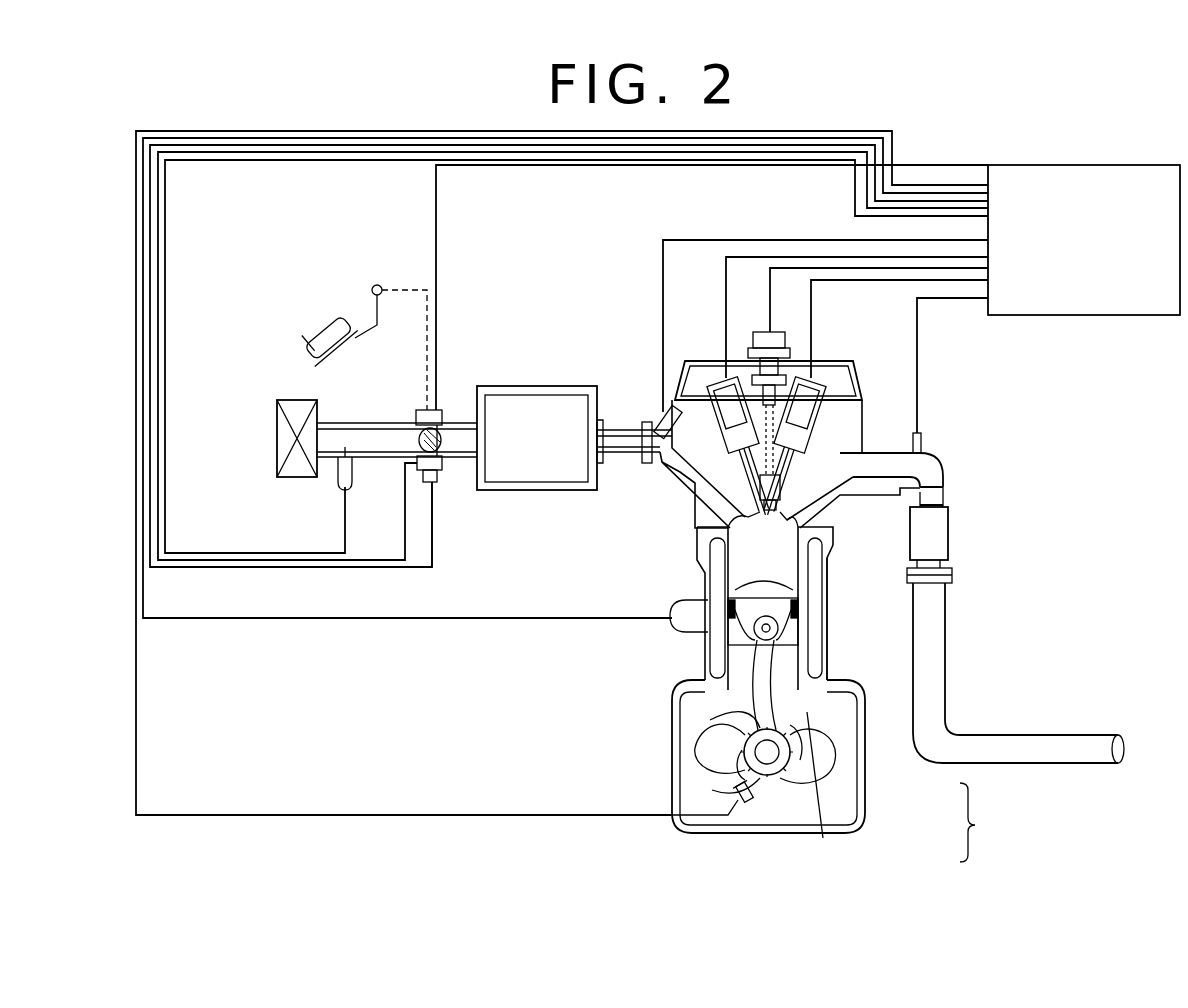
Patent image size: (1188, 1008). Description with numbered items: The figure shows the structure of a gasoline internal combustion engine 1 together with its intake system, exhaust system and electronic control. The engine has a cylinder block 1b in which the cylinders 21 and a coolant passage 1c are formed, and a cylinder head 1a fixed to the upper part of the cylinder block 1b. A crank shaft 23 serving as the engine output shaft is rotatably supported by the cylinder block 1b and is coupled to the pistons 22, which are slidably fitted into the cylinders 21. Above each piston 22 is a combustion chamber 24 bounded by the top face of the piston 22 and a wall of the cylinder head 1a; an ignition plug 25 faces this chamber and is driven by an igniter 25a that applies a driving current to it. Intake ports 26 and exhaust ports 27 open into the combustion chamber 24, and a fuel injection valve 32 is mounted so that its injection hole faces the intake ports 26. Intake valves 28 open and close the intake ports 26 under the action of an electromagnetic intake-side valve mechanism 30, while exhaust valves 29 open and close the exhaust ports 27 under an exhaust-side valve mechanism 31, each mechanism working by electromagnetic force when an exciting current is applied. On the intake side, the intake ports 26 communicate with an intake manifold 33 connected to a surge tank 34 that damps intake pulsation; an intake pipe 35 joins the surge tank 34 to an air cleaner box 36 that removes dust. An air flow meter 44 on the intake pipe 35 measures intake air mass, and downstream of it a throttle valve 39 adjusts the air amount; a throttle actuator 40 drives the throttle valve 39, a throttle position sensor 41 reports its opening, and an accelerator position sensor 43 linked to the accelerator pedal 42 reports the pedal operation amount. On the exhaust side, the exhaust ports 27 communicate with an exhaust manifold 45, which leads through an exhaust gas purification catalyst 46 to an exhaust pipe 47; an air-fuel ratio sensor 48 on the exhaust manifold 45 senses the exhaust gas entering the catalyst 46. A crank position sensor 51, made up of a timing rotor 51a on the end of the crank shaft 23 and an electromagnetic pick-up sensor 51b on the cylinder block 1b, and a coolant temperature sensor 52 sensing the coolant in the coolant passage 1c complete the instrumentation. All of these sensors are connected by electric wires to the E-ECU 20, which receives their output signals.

The internal combustion engine 1 is at (630, 718).
The cylinder head 1a is at (870, 398).
The cylinder block 1b is at (830, 638).
The coolant passage 1c is at (700, 665).
The E-ECU 20 is at (1076, 165).
The cylinder 21 is at (800, 700).
The piston 22 is at (790, 636).
The crank shaft 23 is at (745, 755).
The combustion chamber 24 is at (825, 610).
The ignition plug 25 is at (770, 572).
The igniter 25a is at (758, 332).
The intake port 26 is at (700, 508).
The exhaust port 27 is at (870, 455).
The intake valve 28 is at (716, 556).
The exhaust valve 29 is at (818, 518).
The intake-side valve mechanism 30 is at (712, 377).
The exhaust-side valve mechanism 31 is at (815, 375).
The fuel injection valve 32 is at (653, 406).
The intake manifold 33 is at (620, 420).
The surge tank 34 is at (593, 485).
The intake pipe 35 is at (375, 458).
The air cleaner box 36 is at (293, 477).
The throttle valve 39 is at (447, 453).
The throttle actuator 40 is at (440, 482).
The throttle position sensor 41 is at (438, 495).
The accelerator pedal 42 is at (350, 345).
The accelerator position sensor 43 is at (440, 410).
The air flow meter 44 is at (337, 482).
The exhaust manifold 45 is at (947, 464).
The exhaust gas purification catalyst 46 is at (950, 545).
The exhaust pipe 47 is at (947, 650).
The air-fuel ratio sensor 48 is at (925, 435).
The crank position sensor 51 is at (987, 822).
The timing rotor 51a is at (773, 772).
The electromagnetic pick-up sensor 51b is at (798, 760).
The coolant temperature sensor 52 is at (668, 628).